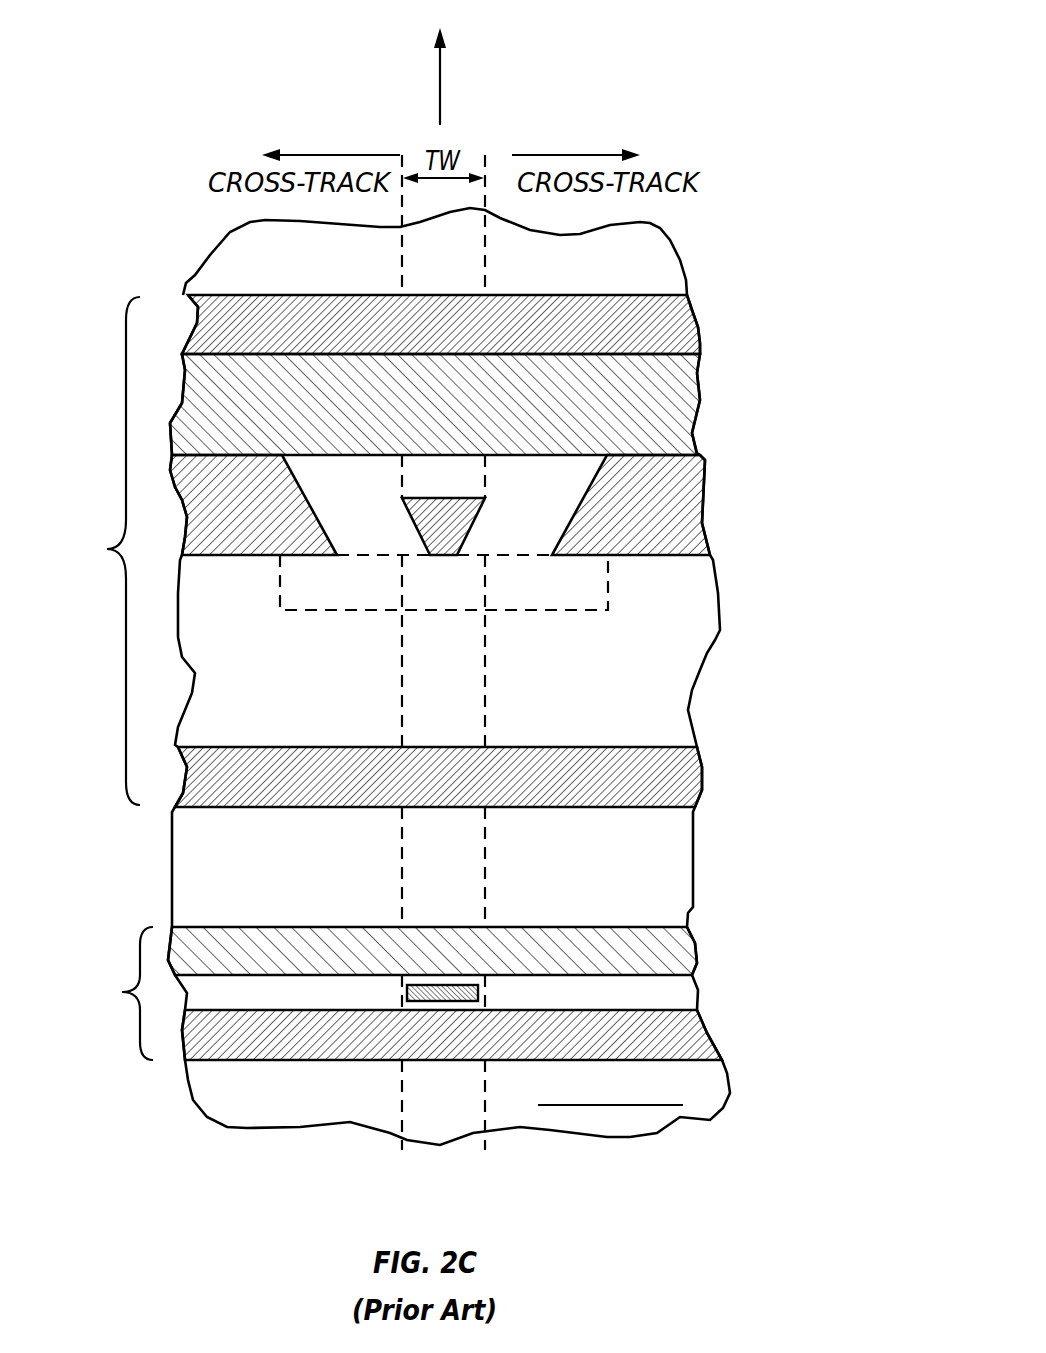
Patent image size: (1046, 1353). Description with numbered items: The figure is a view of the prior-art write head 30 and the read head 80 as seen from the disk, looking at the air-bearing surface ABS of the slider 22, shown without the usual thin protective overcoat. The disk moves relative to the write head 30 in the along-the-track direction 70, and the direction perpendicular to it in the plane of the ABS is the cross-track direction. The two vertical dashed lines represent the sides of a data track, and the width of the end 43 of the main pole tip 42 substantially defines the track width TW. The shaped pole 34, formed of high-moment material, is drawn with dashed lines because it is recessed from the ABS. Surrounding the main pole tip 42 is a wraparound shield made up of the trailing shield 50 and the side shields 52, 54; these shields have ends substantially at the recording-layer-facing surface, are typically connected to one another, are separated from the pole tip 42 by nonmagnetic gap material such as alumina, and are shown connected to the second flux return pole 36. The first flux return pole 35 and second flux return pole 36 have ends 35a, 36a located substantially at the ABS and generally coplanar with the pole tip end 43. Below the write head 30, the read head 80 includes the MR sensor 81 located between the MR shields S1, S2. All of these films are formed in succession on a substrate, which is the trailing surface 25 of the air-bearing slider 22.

The along-the-track direction 70 is at (440, 85).
The end of second flux return pole 36a is at (480, 312).
The second flux return pole 36 is at (700, 345).
The trailing shield 50 is at (668, 408).
The side shield 52 is at (688, 512).
The side shield 54 is at (208, 527).
The pole tip 42 is at (443, 524).
The pole tip end 43 is at (455, 530).
The shaped pole 34 is at (560, 610).
The air-bearing surface ABS is at (680, 685).
The end of first flux return pole 35a is at (477, 764).
The first flux return pole 35 is at (697, 790).
The MR shield S2 is at (672, 955).
The MR sensor 81 is at (485, 993).
The trailing surface 25 is at (563, 1060).
The MR shield S1 is at (683, 1030).
The slider 22 is at (232, 1128).
The write head 30 is at (104, 551).
The read head 80 is at (116, 993).